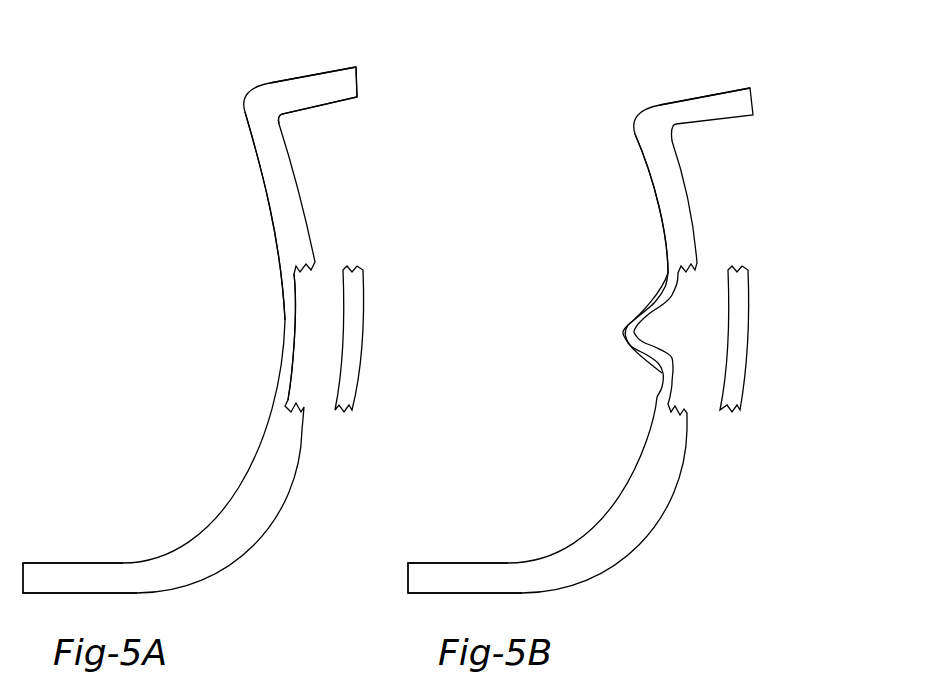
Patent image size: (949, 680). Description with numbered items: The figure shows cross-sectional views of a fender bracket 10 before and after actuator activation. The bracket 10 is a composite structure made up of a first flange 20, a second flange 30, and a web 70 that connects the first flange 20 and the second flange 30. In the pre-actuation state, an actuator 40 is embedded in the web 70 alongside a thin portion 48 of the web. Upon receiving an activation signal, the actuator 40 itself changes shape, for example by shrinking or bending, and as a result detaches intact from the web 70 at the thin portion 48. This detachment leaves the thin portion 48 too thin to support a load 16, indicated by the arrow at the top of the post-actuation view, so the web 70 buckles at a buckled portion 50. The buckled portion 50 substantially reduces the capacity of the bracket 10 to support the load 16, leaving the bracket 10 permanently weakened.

In FIG. 5A, the fender bracket 10 is at (312, 129).
In FIG. 5B, the fender bracket 10 is at (695, 148).
In FIG. 5B, the load 16 is at (685, 78).
In FIG. 5A, the first flange 20 is at (302, 77).
In FIG. 5A, the second flange 30 is at (60, 563).
In FIG. 5B, the second flange 30 is at (445, 563).
In FIG. 5A, the actuator 40 is at (388, 327).
In FIG. 5B, the actuator 40 is at (771, 327).
In FIG. 5A, the thin portion 48 is at (285, 335).
In FIG. 5B, the buckled portion 50 is at (622, 333).
In FIG. 5A, the web 70 is at (270, 155).
In FIG. 5B, the web 70 is at (657, 158).